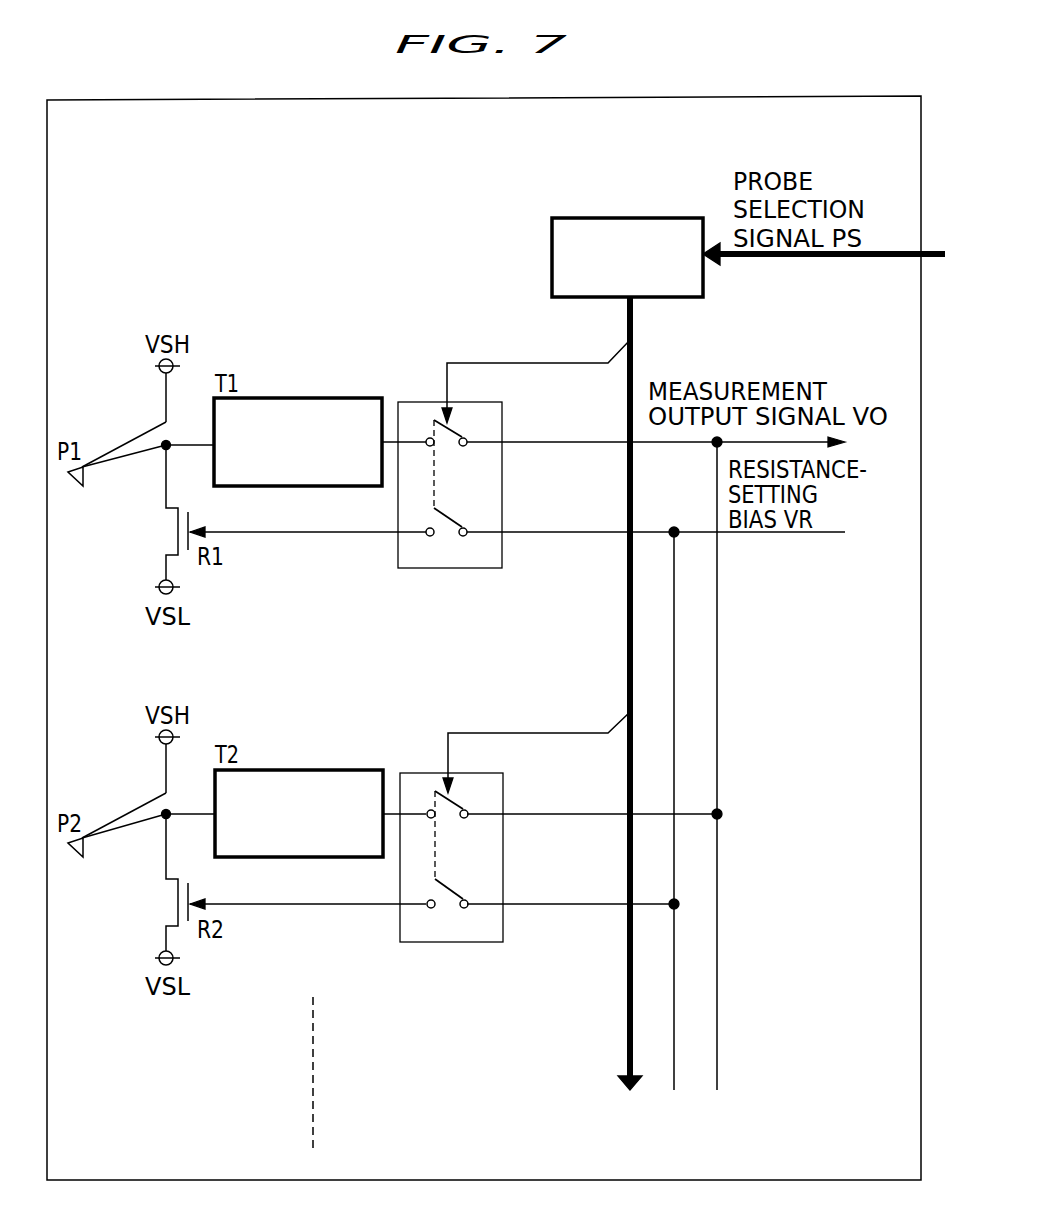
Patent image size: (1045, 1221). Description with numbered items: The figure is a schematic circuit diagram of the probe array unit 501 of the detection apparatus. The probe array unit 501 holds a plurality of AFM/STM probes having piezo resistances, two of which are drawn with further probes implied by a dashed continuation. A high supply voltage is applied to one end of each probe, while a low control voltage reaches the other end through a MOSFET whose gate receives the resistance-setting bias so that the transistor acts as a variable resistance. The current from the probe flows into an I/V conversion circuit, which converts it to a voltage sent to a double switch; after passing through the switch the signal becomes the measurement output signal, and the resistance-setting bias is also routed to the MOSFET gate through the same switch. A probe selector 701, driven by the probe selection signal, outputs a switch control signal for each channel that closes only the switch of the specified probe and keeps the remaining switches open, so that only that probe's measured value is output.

The probe array unit 501 is at (243, 100).
The probe selector 701 is at (580, 218).